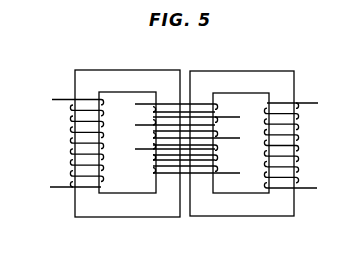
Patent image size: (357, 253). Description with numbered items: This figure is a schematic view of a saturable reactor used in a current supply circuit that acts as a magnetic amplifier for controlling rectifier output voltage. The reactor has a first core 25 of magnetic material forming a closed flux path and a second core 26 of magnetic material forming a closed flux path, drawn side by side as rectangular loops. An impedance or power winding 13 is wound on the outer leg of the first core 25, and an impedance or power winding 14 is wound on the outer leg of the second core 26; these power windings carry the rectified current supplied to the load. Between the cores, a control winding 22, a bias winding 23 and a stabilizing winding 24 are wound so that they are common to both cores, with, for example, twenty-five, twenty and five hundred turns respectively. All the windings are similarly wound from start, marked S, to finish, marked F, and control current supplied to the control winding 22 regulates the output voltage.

The power winding 13 is at (73, 121).
The power winding 14 is at (297, 125).
The control winding 22 is at (198, 103).
The bias winding 23 is at (203, 125).
The stabilizing winding 24 is at (172, 153).
The first core 25 is at (105, 70).
The second core 26 is at (296, 216).